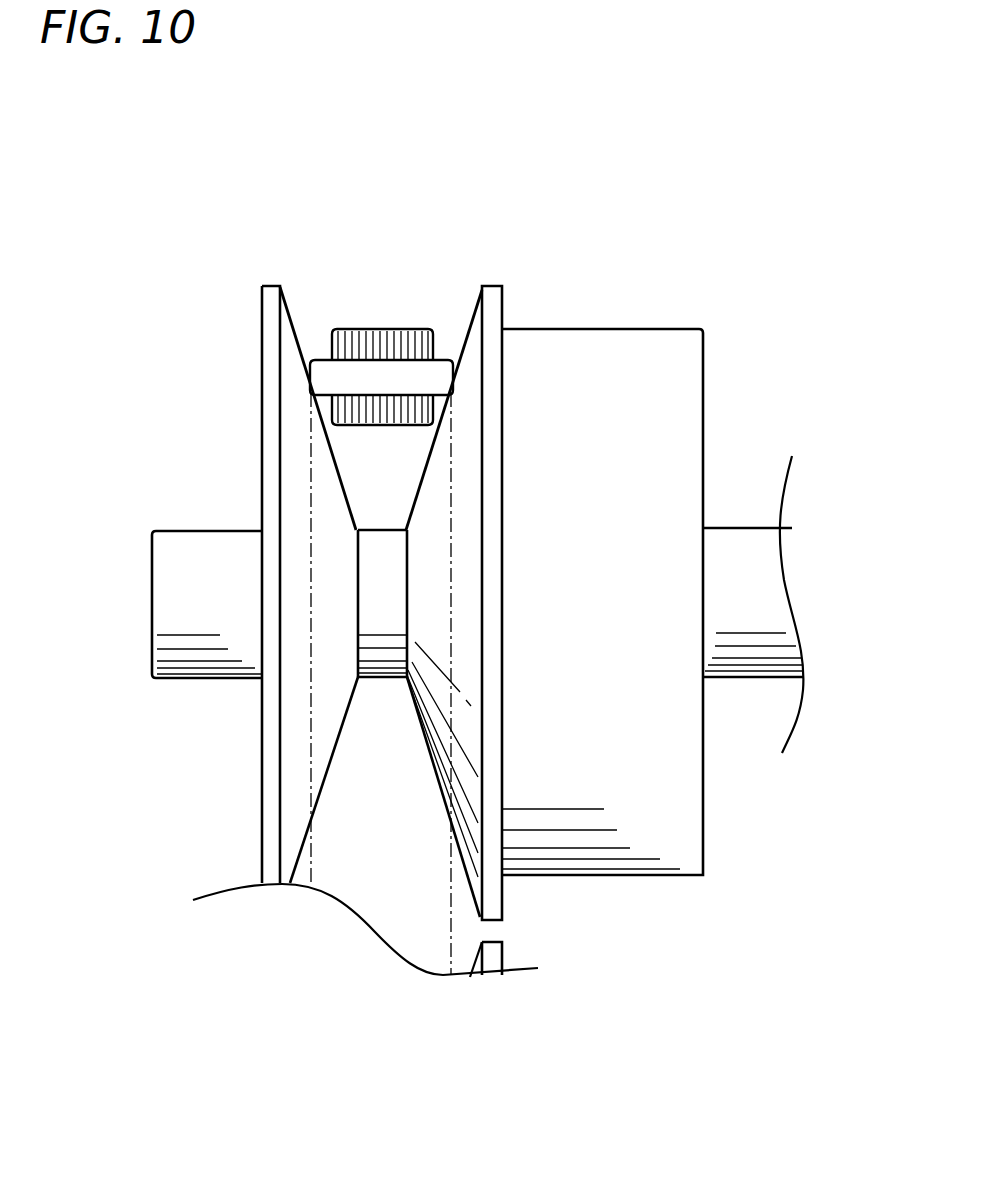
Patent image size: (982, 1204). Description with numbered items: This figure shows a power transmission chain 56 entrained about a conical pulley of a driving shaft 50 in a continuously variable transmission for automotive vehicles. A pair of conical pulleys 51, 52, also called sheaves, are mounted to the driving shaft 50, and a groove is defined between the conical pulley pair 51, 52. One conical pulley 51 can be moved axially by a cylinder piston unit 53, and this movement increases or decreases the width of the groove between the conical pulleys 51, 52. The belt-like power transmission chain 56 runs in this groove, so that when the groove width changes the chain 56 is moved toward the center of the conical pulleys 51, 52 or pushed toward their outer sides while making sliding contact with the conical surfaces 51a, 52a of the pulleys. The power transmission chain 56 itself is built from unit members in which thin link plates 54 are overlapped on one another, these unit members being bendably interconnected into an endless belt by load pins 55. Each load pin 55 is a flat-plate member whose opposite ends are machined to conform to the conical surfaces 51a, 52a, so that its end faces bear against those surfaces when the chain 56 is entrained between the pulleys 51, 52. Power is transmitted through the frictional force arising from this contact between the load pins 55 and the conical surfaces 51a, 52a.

The driving shaft 50 is at (734, 551).
The conical pulley 51 is at (495, 358).
The conical surface 51a is at (470, 318).
The conical pulley 52 is at (270, 368).
The conical surface 52a is at (295, 315).
The cylinder piston unit 53 is at (612, 328).
The link plate 54 is at (397, 329).
The load pin 55 is at (380, 380).
The power transmission chain 56 is at (310, 767).